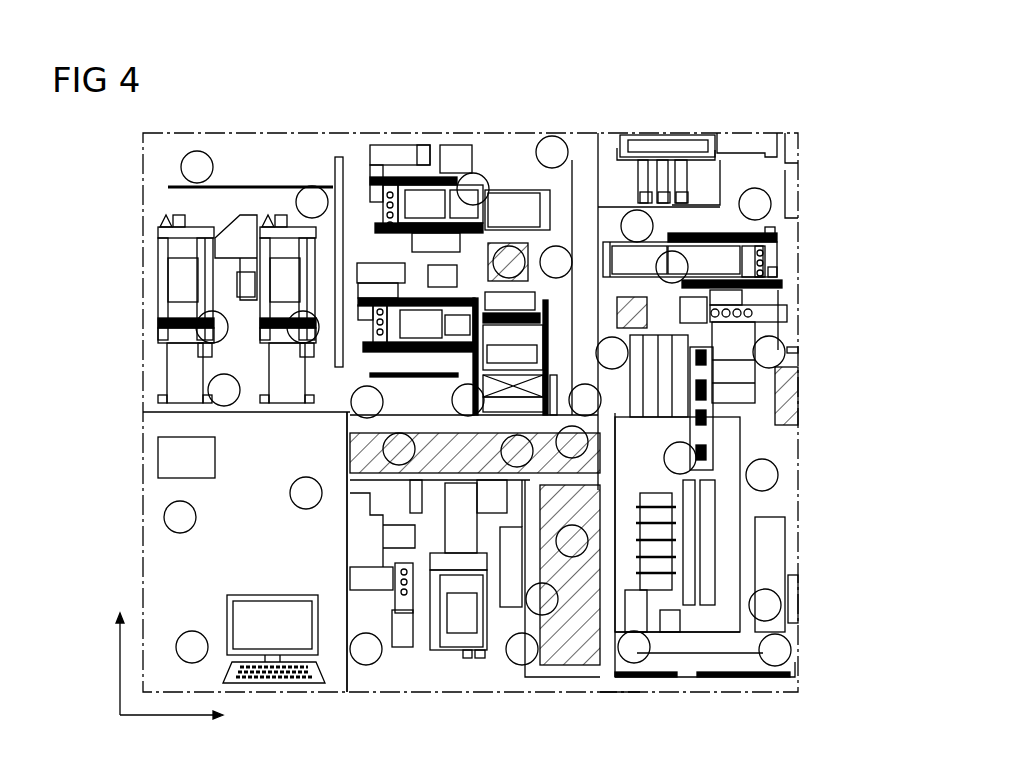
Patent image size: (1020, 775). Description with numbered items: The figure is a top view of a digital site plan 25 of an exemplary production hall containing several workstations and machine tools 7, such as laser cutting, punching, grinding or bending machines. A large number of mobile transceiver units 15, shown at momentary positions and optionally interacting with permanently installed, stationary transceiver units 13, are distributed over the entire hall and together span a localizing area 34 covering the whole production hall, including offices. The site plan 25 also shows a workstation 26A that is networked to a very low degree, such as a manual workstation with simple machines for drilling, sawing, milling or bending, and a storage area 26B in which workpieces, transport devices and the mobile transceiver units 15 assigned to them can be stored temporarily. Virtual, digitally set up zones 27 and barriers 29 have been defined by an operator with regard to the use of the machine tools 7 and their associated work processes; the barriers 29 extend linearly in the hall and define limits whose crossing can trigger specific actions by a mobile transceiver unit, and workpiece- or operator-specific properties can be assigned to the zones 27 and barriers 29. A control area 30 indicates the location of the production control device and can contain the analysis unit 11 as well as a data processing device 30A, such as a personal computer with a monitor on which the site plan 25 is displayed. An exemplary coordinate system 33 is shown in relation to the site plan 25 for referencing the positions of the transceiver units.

The machine tool 7 is at (268, 280).
The analysis unit 11 is at (215, 473).
The stationary transceiver unit 13 is at (488, 419).
The mobile transceiver unit 15 is at (477, 401).
The digital site plan 25 is at (808, 158).
The workstation 26A is at (710, 185).
The storage area 26B is at (745, 510).
The zone 27 is at (350, 457).
The barrier 29 is at (180, 186).
The control area 30 is at (170, 562).
The data processing device 30A is at (283, 595).
The coordinate system 33 is at (120, 702).
The localizing area 34 is at (618, 692).